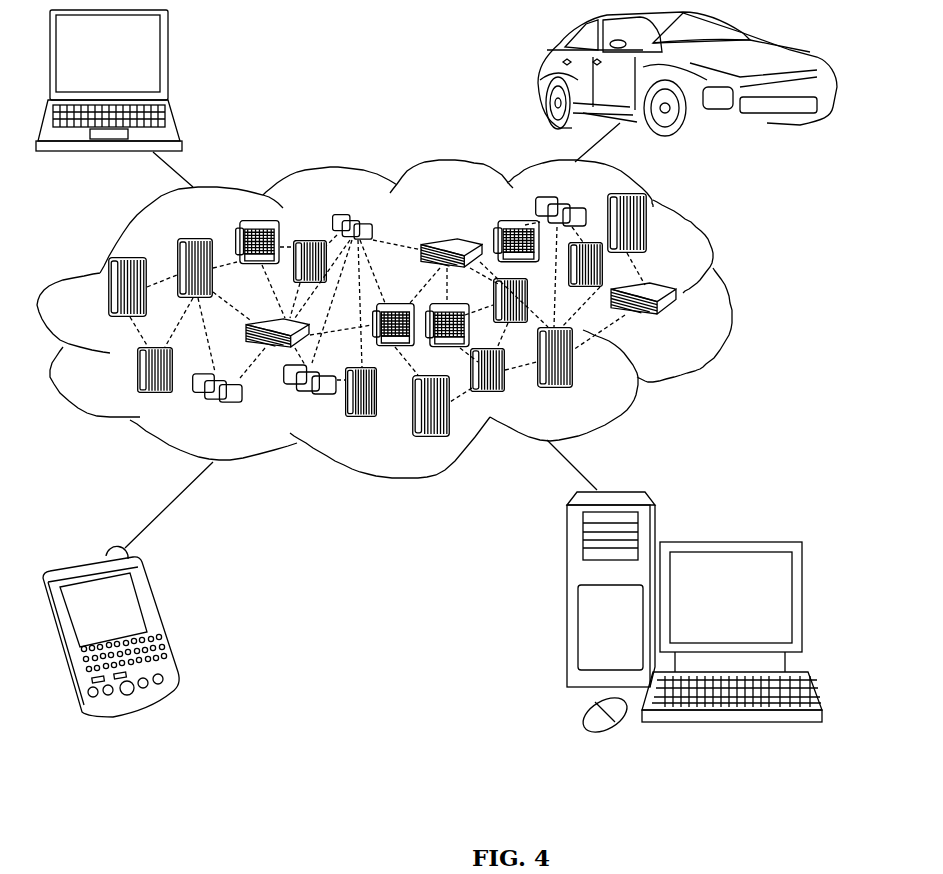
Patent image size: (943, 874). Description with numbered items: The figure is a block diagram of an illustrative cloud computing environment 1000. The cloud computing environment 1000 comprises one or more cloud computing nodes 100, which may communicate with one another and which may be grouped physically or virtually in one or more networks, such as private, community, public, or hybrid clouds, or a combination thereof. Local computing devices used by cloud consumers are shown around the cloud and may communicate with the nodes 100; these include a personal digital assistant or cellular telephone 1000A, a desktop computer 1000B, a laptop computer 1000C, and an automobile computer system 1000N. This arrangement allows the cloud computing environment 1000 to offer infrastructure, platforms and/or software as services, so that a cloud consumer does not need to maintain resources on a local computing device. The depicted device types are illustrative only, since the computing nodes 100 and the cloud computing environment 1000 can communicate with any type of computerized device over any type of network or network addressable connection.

The cloud computing nodes 100 is at (680, 323).
The cloud computing environment 1000 is at (416, 319).
The personal digital assistant (PDA) or cellular telephone 1000A is at (160, 623).
The desktop computer 1000B is at (737, 520).
The laptop computer 1000C is at (168, 63).
The automobile computer system 1000N is at (540, 78).